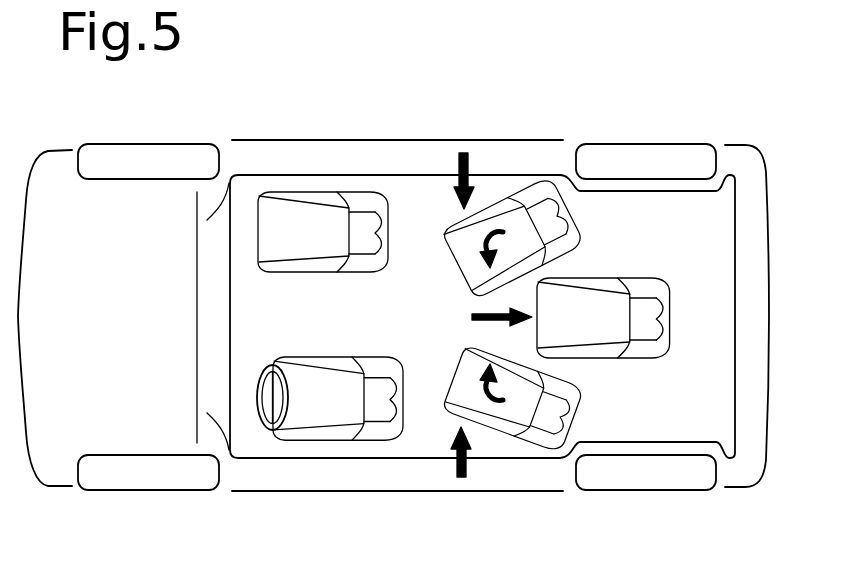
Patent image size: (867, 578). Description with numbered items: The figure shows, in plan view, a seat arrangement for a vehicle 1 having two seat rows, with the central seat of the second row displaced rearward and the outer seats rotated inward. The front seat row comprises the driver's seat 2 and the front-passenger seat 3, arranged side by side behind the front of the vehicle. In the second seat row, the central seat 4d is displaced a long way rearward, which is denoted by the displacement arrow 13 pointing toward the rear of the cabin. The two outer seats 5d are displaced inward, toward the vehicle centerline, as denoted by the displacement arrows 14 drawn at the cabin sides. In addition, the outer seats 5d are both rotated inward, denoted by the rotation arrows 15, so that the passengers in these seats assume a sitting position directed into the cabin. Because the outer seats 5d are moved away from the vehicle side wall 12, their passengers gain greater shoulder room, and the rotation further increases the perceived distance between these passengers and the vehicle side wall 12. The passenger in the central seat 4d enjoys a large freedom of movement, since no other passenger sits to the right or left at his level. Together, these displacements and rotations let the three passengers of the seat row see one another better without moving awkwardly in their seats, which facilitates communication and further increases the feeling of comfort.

The vehicle 1 is at (673, 113).
The driver's seat 2 is at (320, 415).
The front-passenger seat 3 is at (304, 218).
The central seat 4d is at (594, 309).
The outer seats 5d is at (527, 230).
The vehicle side wall 12 is at (403, 175).
The displacement arrow 13 is at (472, 320).
The displacement arrows 14 is at (460, 165).
The rotation arrows 15 is at (474, 257).